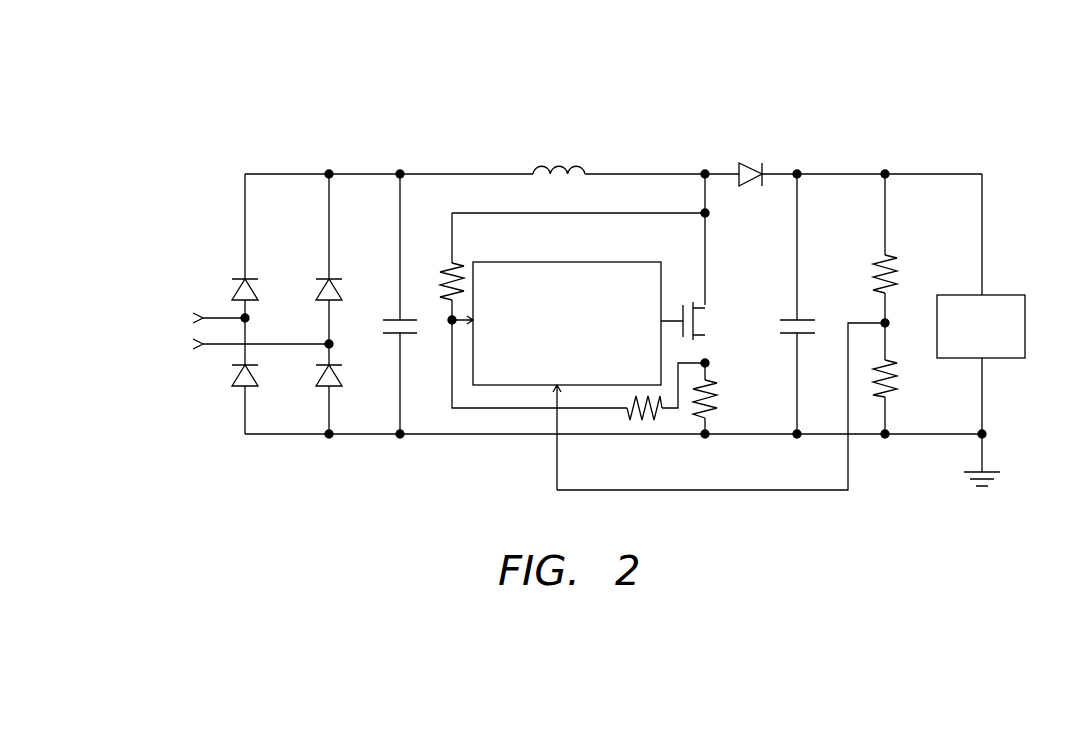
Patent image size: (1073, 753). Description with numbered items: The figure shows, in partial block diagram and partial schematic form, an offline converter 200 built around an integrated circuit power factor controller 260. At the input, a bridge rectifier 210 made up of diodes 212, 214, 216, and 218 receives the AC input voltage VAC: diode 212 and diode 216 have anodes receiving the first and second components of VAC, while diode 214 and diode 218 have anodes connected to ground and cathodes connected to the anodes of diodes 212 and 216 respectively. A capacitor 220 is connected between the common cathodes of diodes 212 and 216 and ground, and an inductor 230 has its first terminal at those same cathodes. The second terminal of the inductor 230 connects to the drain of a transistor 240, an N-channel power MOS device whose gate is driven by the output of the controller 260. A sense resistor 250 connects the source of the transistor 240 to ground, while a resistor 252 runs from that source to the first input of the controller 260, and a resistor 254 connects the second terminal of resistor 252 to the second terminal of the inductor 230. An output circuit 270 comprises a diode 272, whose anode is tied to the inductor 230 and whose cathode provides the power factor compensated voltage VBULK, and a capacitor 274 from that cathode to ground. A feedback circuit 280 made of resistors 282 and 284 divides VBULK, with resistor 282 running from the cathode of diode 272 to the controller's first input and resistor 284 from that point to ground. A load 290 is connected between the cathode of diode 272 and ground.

The offline converter 200 is at (226, 85).
The bridge rectifier 210 is at (275, 163).
The diode 212 is at (234, 279).
The diode 214 is at (234, 386).
The diode 216 is at (318, 279).
The diode 218 is at (318, 386).
The capacitor 220 is at (384, 320).
The inductor 230 is at (571, 162).
The transistor 240 is at (699, 306).
The sense resistor 250 is at (716, 396).
The resistor 252 is at (641, 422).
The resistor 254 is at (444, 270).
The integrated circuit power factor controller 260 is at (545, 262).
The output circuit 270 is at (746, 123).
The diode 272 is at (770, 165).
The capacitor 274 is at (782, 320).
The feedback circuit 280 is at (879, 123).
The resistor 282 is at (899, 271).
The resistor 284 is at (896, 396).
The load 290 is at (1001, 294).